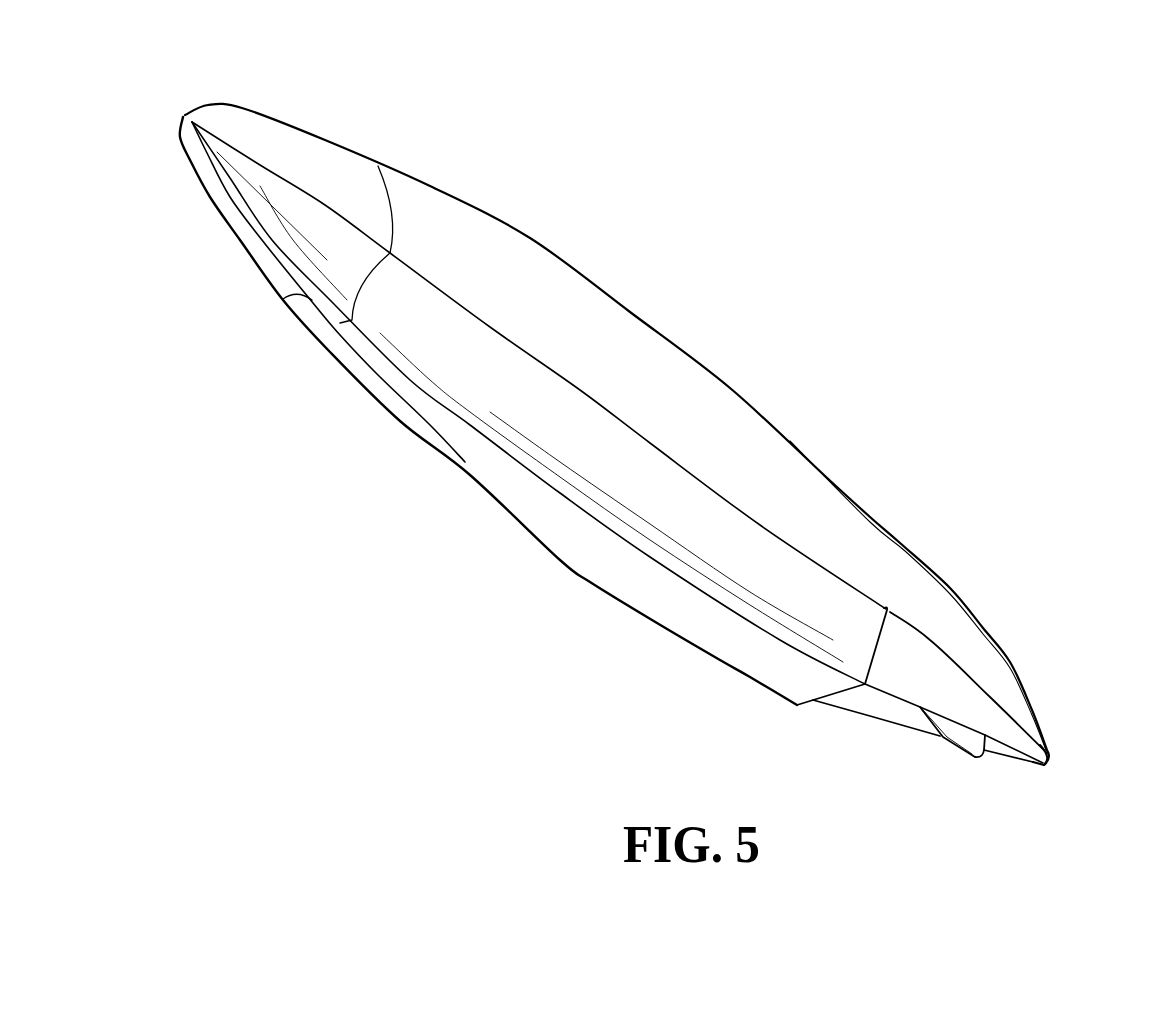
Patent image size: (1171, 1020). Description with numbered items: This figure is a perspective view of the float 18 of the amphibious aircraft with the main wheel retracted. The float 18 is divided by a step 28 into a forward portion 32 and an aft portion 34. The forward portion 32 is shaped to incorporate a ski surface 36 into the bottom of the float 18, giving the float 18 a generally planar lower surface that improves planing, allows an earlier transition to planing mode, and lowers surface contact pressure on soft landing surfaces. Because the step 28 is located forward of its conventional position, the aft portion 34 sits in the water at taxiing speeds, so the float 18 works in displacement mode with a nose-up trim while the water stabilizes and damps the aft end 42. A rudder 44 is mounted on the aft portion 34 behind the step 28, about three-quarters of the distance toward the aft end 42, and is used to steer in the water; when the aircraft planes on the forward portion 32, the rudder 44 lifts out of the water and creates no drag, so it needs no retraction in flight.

The float 18 is at (337, 163).
The step 28 is at (852, 687).
The forward portion 32 is at (420, 347).
The aft portion 34 is at (905, 717).
The ski surface 36 is at (697, 625).
The aft end 42 is at (1035, 765).
The rudder 44 is at (967, 737).